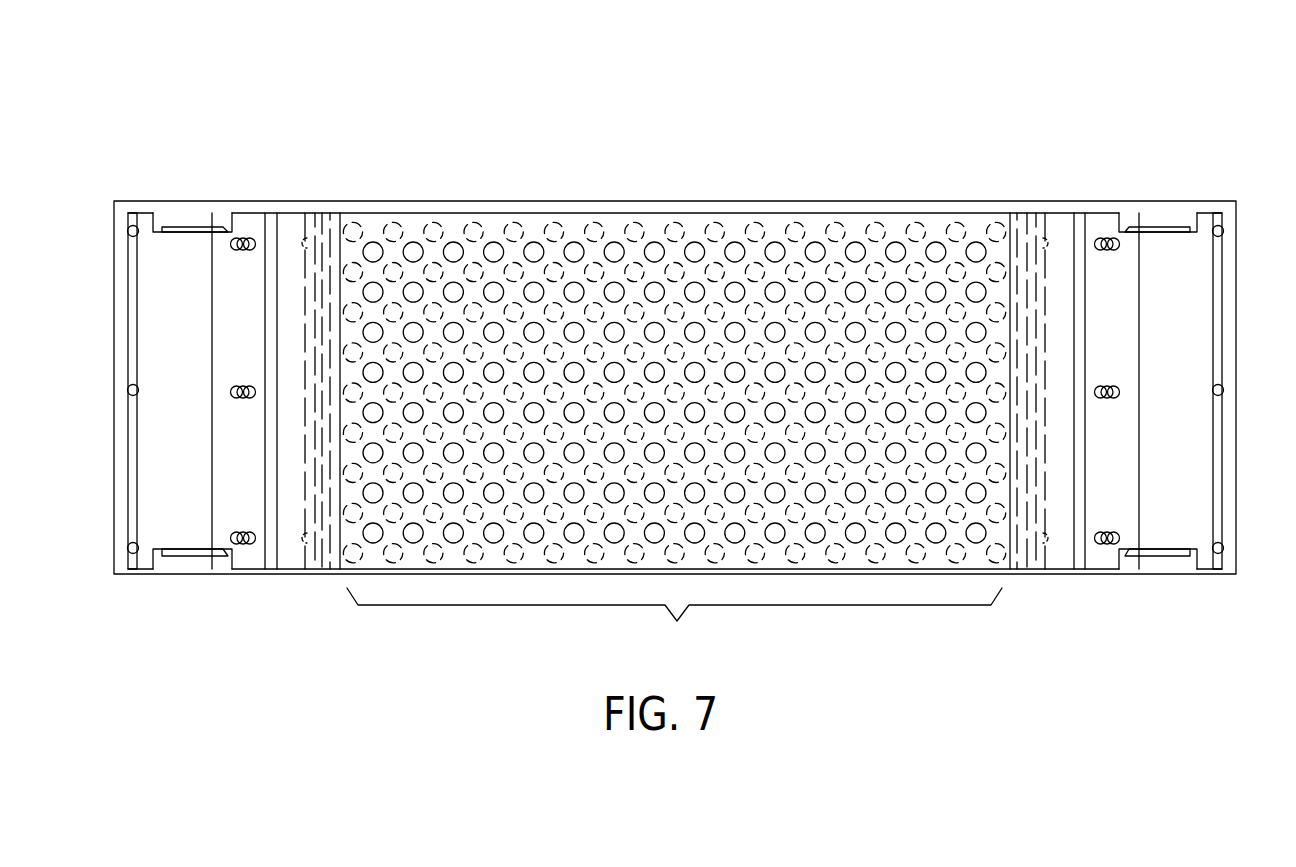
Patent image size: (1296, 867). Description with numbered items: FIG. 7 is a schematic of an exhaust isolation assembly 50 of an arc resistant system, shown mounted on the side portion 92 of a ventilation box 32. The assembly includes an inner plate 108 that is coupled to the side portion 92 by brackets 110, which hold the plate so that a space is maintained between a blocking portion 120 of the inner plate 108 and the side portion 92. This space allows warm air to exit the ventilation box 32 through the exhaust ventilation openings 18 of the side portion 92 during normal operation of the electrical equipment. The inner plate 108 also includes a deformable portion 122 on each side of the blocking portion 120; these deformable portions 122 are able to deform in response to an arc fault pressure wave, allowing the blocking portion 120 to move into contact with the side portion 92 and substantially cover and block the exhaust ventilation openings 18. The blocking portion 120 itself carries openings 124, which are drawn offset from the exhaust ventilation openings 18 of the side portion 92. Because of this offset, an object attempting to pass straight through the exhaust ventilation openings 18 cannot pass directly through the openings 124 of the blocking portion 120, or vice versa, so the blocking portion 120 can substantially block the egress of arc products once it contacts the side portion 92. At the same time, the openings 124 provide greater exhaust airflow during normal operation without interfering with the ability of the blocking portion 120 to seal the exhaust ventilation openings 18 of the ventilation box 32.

The exhaust ventilation openings 18 is at (595, 222).
The ventilation box 32 is at (462, 86).
The exhaust isolation assembly 50 is at (1142, 108).
The side portion 92 is at (178, 208).
The inner plate 108 is at (478, 208).
The brackets 110 is at (213, 580).
The blocking portion 120 is at (674, 620).
The deformable portion 122 is at (323, 180).
The openings 124 is at (975, 242).